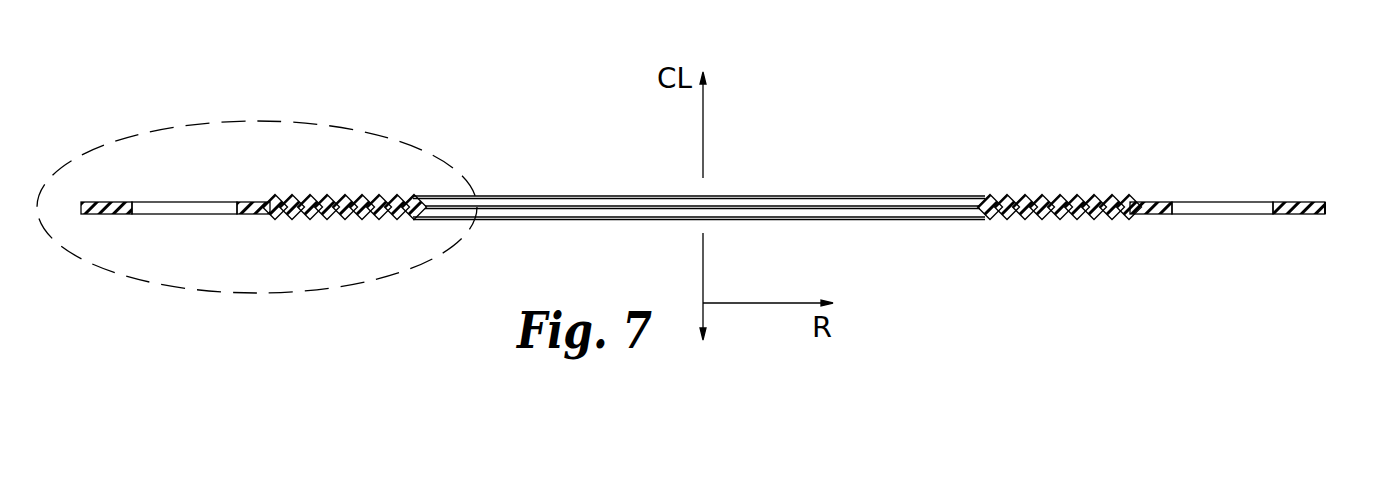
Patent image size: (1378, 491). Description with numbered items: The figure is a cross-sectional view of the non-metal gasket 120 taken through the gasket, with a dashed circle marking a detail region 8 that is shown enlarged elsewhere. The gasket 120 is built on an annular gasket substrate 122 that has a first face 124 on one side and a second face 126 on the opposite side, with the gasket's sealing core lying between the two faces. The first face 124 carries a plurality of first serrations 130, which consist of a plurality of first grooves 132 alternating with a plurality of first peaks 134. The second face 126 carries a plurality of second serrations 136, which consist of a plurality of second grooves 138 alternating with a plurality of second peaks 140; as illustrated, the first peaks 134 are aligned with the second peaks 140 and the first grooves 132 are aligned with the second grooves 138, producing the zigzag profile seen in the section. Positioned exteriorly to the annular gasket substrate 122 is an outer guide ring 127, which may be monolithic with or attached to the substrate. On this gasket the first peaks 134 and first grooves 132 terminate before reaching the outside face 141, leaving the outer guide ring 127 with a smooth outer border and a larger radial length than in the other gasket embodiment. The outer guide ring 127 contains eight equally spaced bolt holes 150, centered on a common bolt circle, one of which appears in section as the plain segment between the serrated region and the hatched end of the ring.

The detail region of FIG. 8 is at (155, 133).
The gasket 120 is at (726, 166).
The annular gasket substrate 122 is at (699, 210).
The first face 124 is at (885, 197).
The second face 126 is at (910, 218).
The plurality of first serrations 130 is at (1074, 210).
The plurality of first grooves 132 is at (1070, 198).
The plurality of first peaks 134 is at (1130, 197).
The plurality of second serrations 136 is at (1043, 221).
The plurality of second grooves 138 is at (1070, 221).
The plurality of second peaks 140 is at (1113, 221).
The bolt holes 150 is at (1222, 201).
The outer guide ring 127 is at (1322, 213).
The outside face 141 is at (1327, 207).